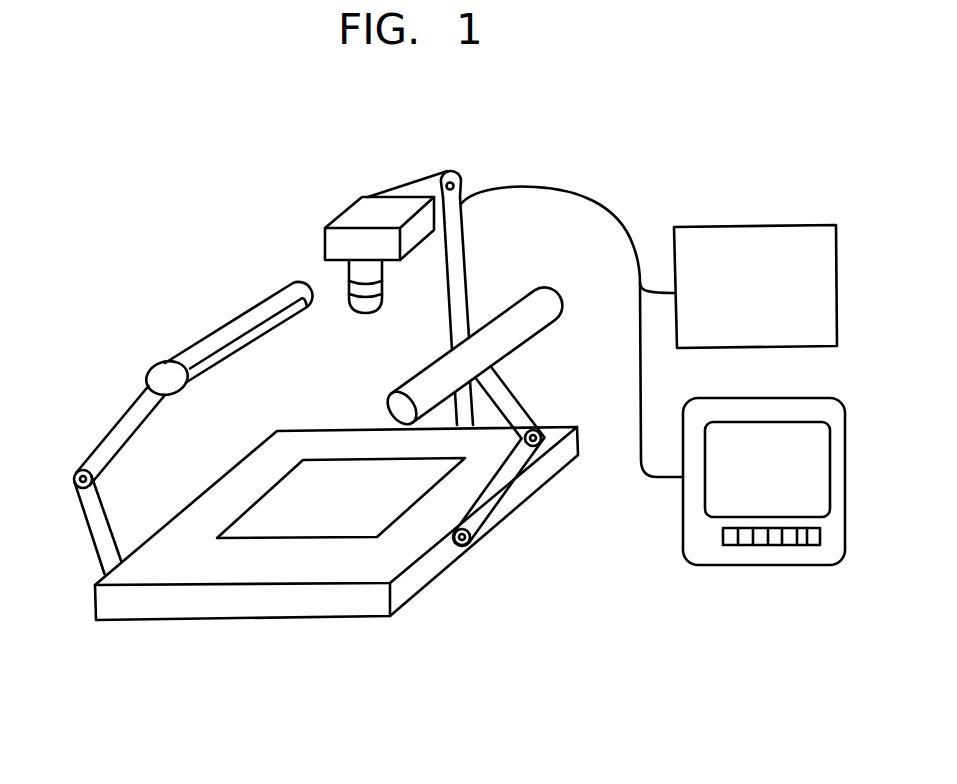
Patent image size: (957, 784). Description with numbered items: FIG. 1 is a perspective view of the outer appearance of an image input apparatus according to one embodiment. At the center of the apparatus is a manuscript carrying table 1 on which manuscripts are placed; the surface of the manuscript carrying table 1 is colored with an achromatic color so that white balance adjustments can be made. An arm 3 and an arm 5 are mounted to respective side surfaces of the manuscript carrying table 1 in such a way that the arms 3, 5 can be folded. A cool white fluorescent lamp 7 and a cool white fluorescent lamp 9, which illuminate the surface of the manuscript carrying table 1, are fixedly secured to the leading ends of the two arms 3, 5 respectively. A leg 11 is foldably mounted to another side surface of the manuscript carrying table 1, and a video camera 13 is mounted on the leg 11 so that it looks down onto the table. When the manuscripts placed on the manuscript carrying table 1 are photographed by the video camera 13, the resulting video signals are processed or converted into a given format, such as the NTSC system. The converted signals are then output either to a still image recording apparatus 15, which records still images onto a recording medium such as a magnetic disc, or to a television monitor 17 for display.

The manuscript carrying table 1 is at (270, 612).
The arm 3 is at (98, 527).
The arm 5 is at (497, 493).
The cool white fluorescent lamp 7 is at (218, 323).
The cool white fluorescent lamp 9 is at (540, 318).
The leg 11 is at (455, 260).
The video camera 13 is at (362, 212).
The still image recording apparatus 15 is at (755, 227).
The television monitor 17 is at (746, 398).